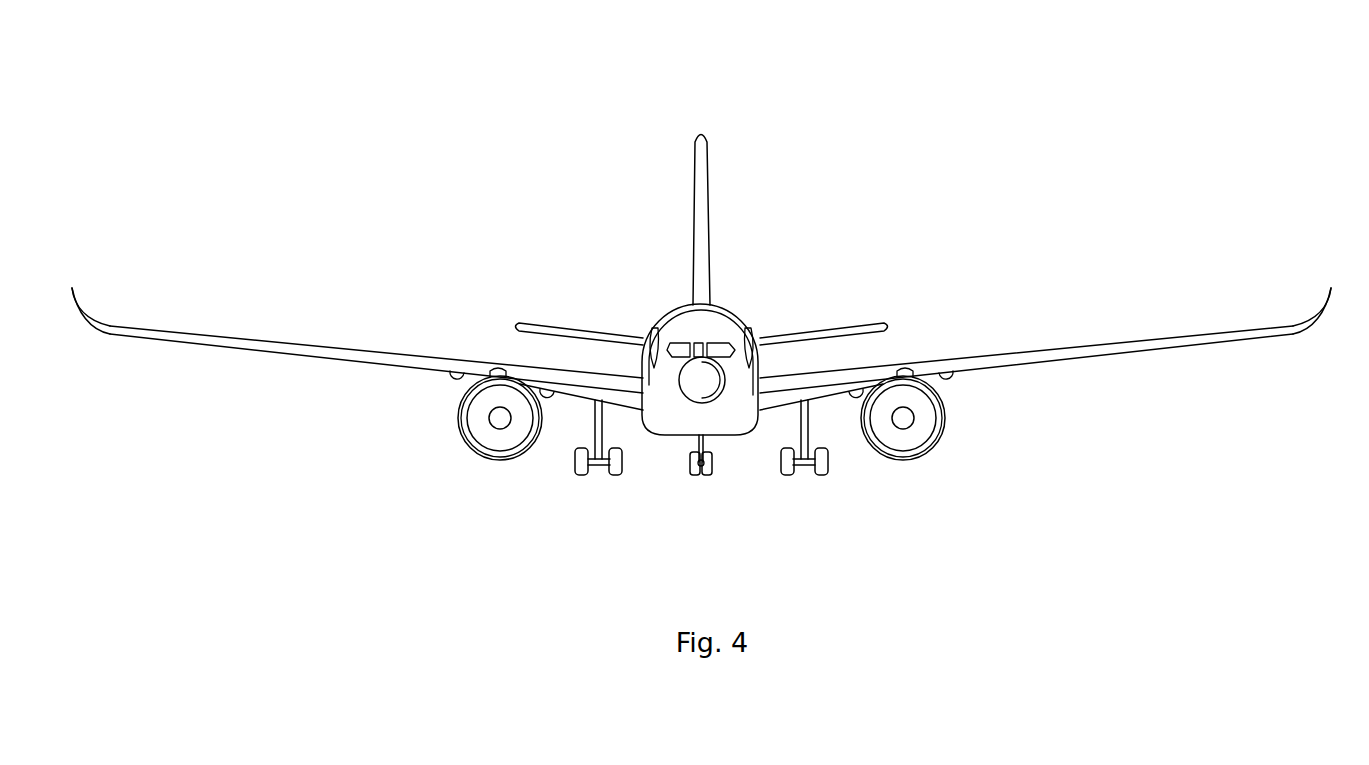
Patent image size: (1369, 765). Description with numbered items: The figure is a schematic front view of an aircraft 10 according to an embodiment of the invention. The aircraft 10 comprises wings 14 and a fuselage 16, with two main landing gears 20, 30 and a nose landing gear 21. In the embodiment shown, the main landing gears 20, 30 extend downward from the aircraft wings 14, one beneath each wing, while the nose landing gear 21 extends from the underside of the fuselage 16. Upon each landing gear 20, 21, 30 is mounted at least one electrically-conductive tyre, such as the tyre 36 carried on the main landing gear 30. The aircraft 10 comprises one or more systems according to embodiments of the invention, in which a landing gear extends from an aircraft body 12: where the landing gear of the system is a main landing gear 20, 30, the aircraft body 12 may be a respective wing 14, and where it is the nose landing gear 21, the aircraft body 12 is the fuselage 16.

The aircraft 10 is at (436, 183).
The aircraft body 12 is at (468, 347).
The wings 14 is at (238, 338).
The fuselage 16 is at (675, 310).
The main landing gear 20 is at (588, 476).
The nose landing gear 21 is at (705, 478).
The main landing gear 30 is at (807, 478).
The electrically-conductive tyre 36 is at (822, 478).